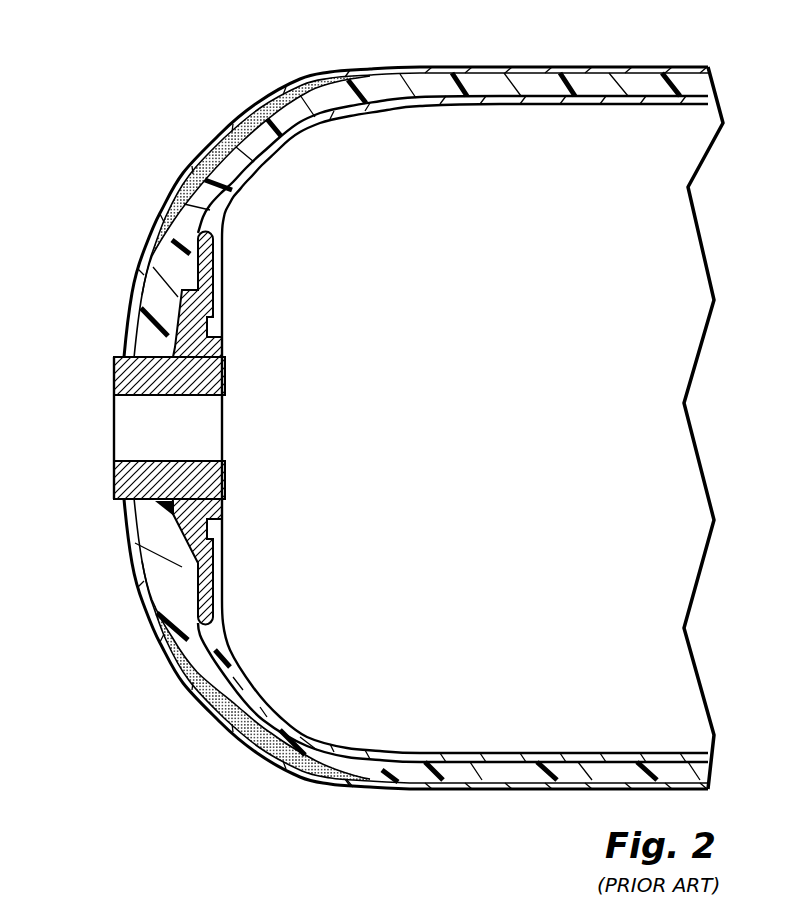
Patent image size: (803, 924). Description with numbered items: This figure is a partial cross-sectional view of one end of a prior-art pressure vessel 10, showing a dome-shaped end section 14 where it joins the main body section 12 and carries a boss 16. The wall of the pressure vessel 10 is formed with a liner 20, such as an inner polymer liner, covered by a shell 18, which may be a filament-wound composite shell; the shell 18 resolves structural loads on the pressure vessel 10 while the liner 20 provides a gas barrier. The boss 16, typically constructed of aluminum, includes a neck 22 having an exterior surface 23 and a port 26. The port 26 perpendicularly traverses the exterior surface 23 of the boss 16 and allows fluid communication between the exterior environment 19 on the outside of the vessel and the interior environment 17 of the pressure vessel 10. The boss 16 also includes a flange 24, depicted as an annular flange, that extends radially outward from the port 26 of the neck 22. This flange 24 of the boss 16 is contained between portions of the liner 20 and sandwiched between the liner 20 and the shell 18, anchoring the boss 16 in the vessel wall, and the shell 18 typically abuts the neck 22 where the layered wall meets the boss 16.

The pressure vessel 10 is at (389, 403).
The main body section 12 is at (665, 80).
The end section 14 is at (209, 133).
The boss 16 is at (161, 428).
The interior environment 17 is at (322, 441).
The shell 18 is at (579, 66).
The exterior environment 19 is at (30, 394).
The liner 20 is at (708, 100).
The neck 22 is at (138, 377).
The exterior surface 23 is at (115, 465).
The flange 24 is at (195, 300).
The port 26 is at (168, 428).